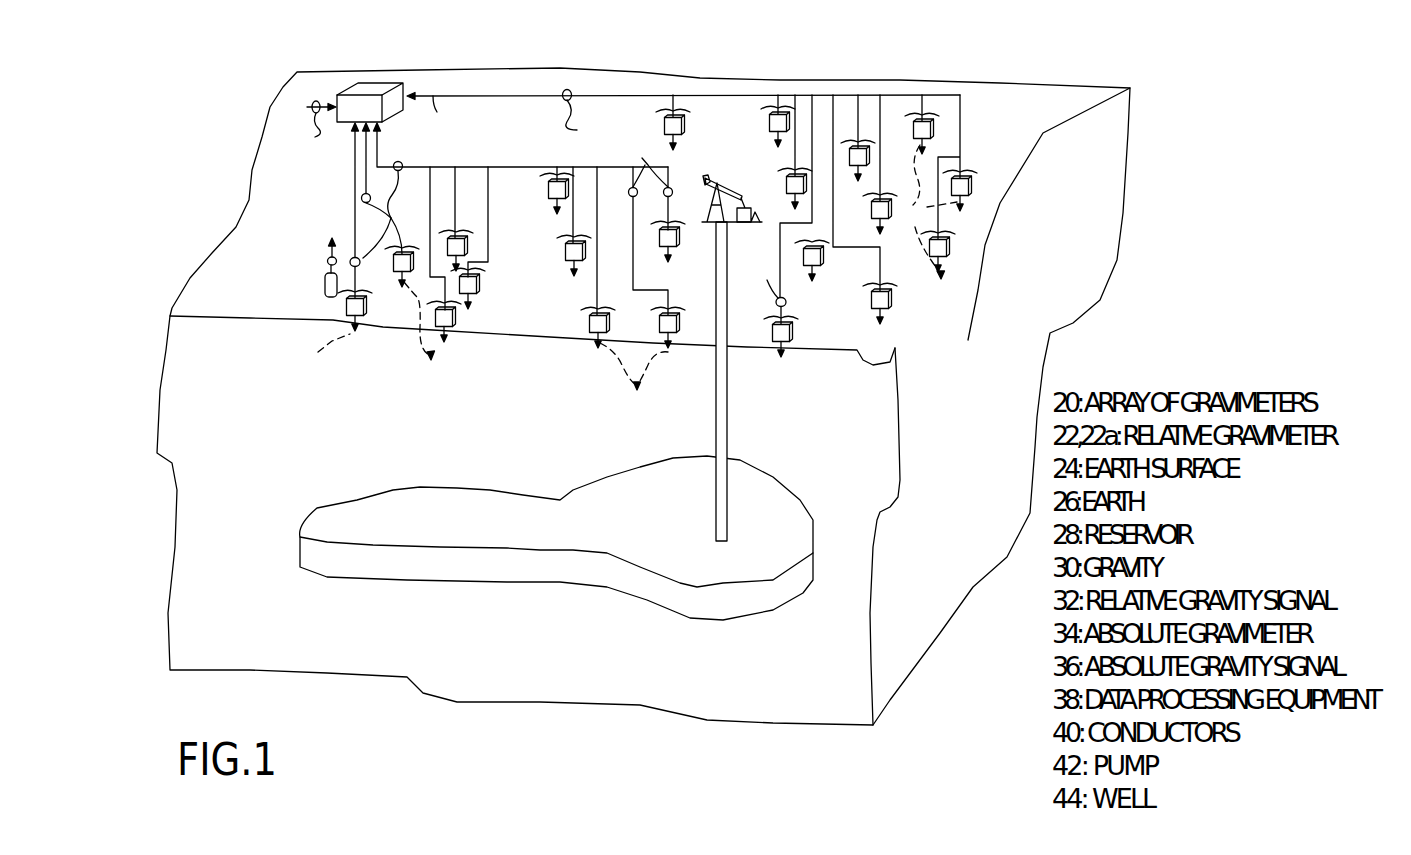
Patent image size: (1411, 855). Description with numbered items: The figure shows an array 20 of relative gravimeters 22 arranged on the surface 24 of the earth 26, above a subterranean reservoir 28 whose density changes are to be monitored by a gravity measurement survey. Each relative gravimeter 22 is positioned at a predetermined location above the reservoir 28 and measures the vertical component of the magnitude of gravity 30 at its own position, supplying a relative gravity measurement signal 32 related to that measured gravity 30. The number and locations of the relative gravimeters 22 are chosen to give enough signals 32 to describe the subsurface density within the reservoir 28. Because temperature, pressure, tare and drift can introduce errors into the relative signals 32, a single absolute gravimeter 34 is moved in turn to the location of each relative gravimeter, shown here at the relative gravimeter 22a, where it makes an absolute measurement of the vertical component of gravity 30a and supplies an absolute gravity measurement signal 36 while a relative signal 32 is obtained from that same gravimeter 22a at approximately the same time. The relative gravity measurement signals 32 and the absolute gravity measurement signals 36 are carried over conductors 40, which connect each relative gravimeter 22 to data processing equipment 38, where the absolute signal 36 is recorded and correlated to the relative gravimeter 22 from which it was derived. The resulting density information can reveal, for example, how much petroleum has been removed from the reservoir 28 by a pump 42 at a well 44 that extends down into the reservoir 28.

The array of relative gravimeters 20 is at (993, 123).
The relative gravimeter 22 is at (769, 123).
The relative gravimeter 22a is at (367, 316).
The earth surface 24 is at (267, 163).
The earth 26 is at (152, 341).
The subterranean reservoir 28 is at (550, 567).
The gravity 30 is at (680, 279).
The vertical component of gravity 30a is at (318, 351).
The relative gravity measurement signal 32 is at (568, 198).
The absolute gravimeter 34 is at (325, 284).
The absolute gravity measurement signal 36 is at (327, 257).
The data processing equipment 38 is at (381, 90).
The conductors 40 is at (357, 160).
The pump 42 is at (720, 183).
The well 44 is at (730, 480).